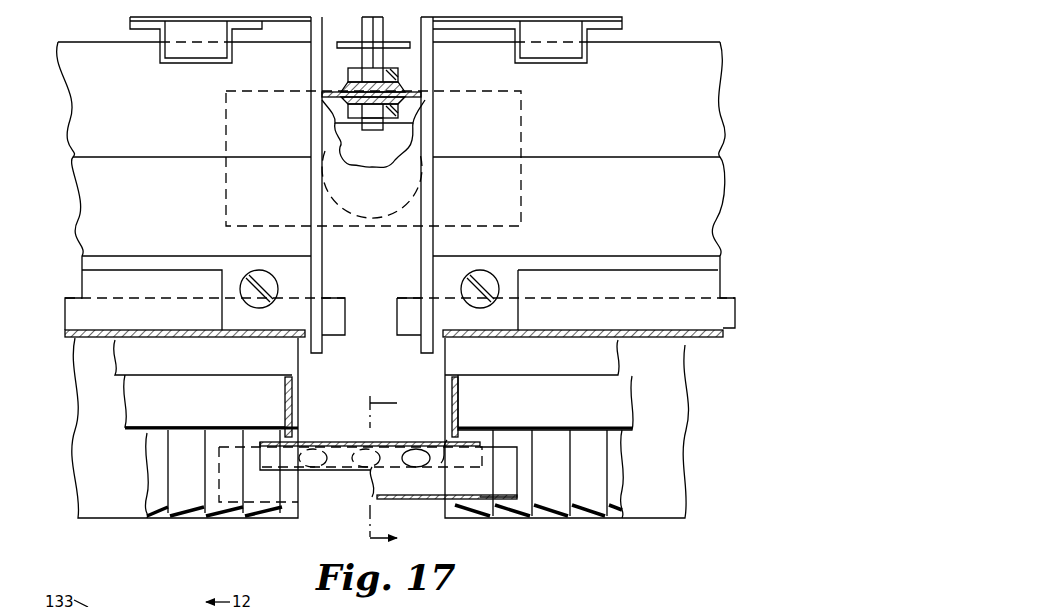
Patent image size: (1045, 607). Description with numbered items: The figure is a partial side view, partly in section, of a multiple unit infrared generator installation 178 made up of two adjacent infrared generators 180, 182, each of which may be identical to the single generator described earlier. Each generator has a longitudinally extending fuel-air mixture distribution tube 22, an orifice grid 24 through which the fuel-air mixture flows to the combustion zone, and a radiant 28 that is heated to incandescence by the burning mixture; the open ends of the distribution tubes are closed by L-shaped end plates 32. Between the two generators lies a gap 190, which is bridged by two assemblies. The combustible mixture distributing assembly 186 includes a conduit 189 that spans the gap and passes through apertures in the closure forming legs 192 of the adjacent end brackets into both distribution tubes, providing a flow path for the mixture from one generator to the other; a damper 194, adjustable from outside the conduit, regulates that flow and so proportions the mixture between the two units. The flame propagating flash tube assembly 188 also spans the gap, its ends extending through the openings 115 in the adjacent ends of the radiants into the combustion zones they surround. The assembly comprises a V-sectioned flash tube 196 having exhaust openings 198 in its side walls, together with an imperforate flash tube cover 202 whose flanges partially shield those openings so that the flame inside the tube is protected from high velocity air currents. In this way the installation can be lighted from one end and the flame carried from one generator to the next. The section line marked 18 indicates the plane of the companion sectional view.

The section line 18- 18 is at (375, 472).
The fuel-air mixture distribution tube 22 is at (112, 105).
The orifice grid 24 is at (395, 312).
The radiant 28 is at (190, 521).
The end plate 32 is at (232, 16).
The openings 115 is at (296, 432).
The infrared generator installation 178 is at (392, 26).
The infrared generator 180 is at (96, 40).
The infrared generator 182 is at (663, 41).
The combustible mixture distributing assembly 186 is at (225, 125).
The flame propagating flash tube assembly 188 is at (382, 495).
The conduit 189 is at (283, 91).
The gap 190 is at (354, 29).
The closure forming legs 192 is at (421, 251).
The damper 194 is at (390, 195).
The flash tube 196 is at (517, 470).
The exhaust openings 198 is at (416, 451).
The flash tube cover 202 is at (347, 441).